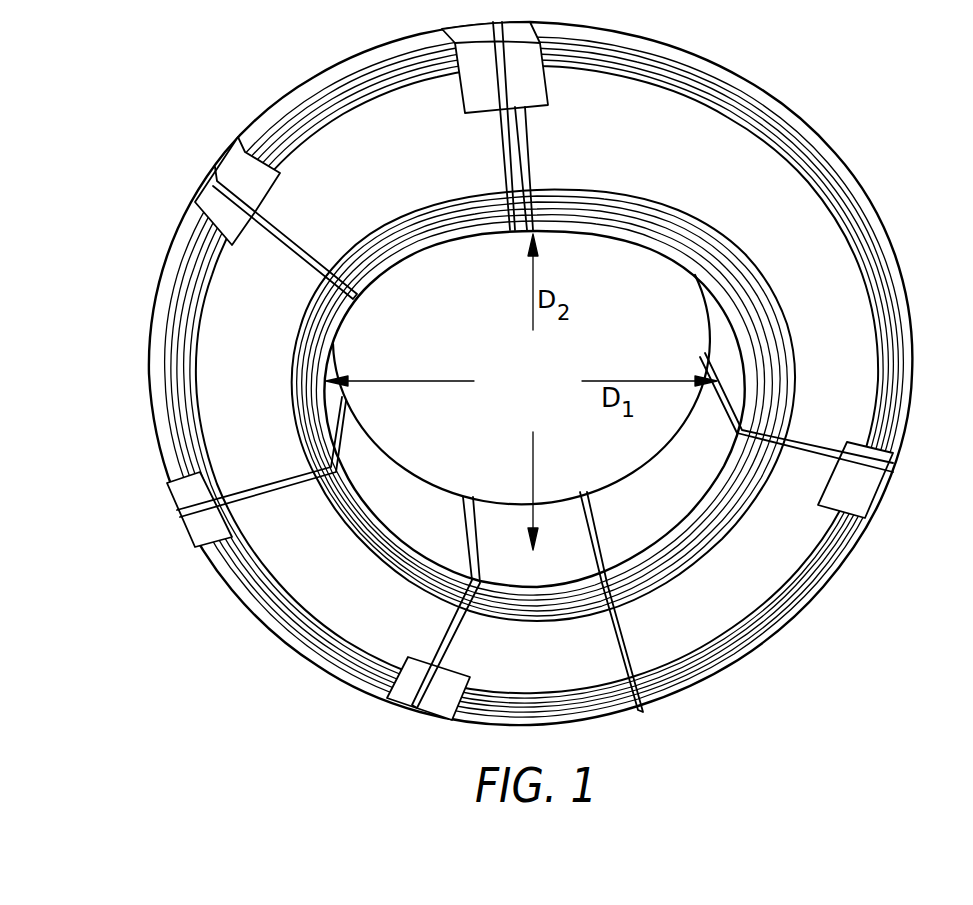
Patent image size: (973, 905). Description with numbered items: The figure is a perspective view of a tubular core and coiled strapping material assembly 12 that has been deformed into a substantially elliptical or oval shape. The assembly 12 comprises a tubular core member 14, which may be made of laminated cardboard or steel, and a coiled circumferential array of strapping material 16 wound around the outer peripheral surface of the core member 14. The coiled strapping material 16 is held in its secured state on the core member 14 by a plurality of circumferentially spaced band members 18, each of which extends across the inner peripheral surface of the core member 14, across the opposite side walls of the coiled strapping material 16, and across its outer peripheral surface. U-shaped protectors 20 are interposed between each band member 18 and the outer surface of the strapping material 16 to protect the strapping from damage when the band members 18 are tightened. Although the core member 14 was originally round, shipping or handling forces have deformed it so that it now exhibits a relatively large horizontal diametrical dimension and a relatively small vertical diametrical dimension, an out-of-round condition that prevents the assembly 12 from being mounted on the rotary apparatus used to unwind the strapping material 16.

The tubular core and coiled strapping material assembly 12 is at (838, 150).
The tubular core member 14 is at (393, 483).
The coiled array of strapping material 16 is at (745, 625).
The band members 18 is at (510, 136).
The U-shaped protectors 20 is at (473, 93).